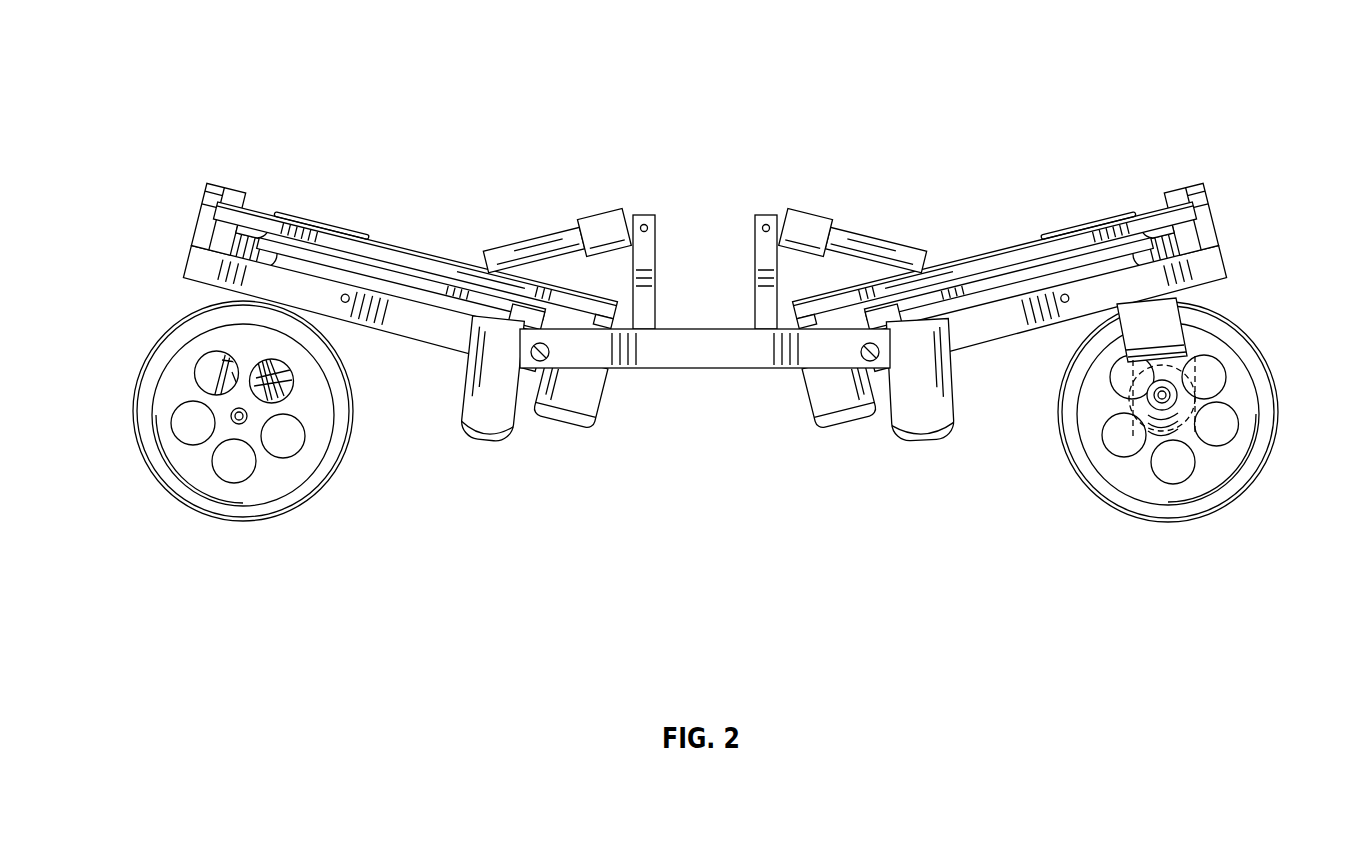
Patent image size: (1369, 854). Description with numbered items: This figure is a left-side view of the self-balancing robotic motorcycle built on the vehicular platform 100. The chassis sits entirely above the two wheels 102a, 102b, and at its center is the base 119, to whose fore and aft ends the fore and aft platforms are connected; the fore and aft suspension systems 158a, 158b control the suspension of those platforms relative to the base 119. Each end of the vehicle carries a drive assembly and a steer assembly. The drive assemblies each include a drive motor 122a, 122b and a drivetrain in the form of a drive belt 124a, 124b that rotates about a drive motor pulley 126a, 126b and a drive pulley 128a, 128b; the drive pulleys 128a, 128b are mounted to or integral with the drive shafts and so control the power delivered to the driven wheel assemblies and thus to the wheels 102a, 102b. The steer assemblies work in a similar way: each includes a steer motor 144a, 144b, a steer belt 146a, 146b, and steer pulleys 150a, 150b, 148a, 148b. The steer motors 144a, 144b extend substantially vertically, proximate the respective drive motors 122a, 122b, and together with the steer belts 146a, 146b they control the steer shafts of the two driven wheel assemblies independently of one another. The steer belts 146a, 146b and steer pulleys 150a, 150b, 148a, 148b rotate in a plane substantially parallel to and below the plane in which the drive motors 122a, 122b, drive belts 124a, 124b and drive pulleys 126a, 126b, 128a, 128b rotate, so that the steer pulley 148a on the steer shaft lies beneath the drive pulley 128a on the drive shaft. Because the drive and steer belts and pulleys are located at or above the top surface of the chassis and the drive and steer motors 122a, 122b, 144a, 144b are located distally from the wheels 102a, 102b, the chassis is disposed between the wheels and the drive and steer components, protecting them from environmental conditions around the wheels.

The vehicular platform 100 is at (1184, 84).
The wheel 102a is at (1270, 393).
The wheel 102b is at (152, 375).
The base 119 is at (704, 325).
The drive motor 122a is at (828, 417).
The drive motor 122b is at (582, 417).
The drive belt 124a is at (997, 262).
The drive belt 124b is at (383, 252).
The drive motor pulley 126a is at (810, 323).
The drive motor pulley 126b is at (600, 323).
The drive pulley 128a is at (1165, 212).
The drive pulley 128b is at (246, 212).
The steer motor 144a is at (918, 417).
The steer motor 144b is at (492, 417).
The steer belt 146a is at (1003, 285).
The steer belt 146b is at (407, 285).
The steer pulley 148a is at (913, 317).
The steer pulley 148b is at (497, 317).
The steer pulley 150a is at (1163, 297).
The steer pulley 150b is at (262, 297).
The suspension system 158a is at (870, 243).
The suspension system 158b is at (547, 243).